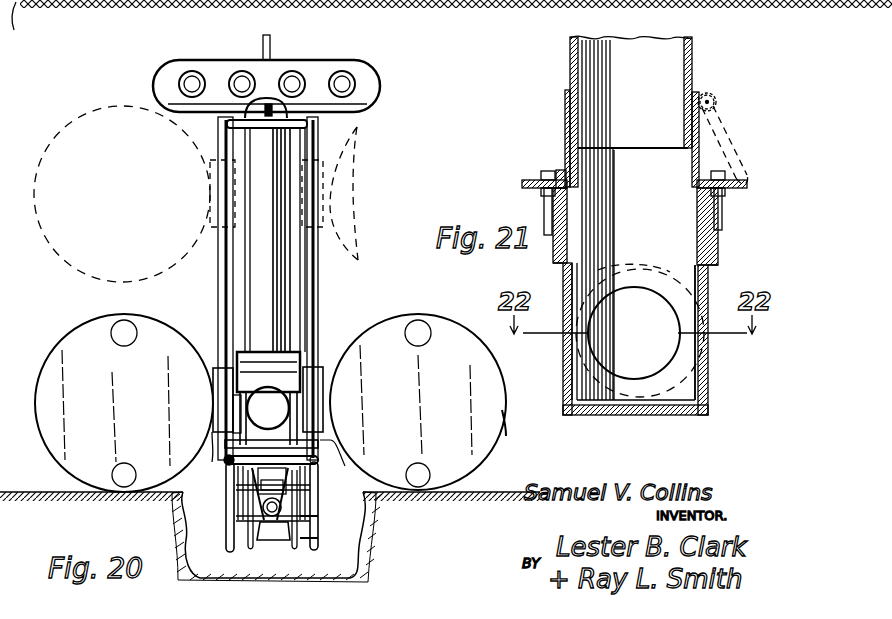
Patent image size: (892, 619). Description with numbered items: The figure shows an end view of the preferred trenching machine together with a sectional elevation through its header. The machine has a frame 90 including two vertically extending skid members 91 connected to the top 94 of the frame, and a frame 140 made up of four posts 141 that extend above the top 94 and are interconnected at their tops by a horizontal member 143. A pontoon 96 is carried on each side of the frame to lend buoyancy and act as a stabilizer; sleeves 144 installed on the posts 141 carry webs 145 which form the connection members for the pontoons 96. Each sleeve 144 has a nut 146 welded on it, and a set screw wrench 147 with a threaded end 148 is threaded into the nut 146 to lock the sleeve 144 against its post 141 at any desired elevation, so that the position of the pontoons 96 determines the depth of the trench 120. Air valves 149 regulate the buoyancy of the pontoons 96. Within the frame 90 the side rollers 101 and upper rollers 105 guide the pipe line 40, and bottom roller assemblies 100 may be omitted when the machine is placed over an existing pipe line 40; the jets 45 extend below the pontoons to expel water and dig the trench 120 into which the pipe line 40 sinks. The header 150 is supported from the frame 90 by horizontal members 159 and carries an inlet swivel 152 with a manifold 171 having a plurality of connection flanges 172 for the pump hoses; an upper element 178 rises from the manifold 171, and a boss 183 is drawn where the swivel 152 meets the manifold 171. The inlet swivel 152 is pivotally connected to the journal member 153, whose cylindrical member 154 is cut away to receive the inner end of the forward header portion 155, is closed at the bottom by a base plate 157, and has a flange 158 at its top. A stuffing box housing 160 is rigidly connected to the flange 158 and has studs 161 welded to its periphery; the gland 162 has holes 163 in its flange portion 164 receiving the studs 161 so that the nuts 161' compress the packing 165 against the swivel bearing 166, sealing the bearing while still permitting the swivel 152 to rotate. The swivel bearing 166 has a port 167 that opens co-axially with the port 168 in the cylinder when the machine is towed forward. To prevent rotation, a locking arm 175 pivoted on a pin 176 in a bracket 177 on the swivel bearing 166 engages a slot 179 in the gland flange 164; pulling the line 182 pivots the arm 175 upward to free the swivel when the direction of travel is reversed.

In FIG. 20, the manifold 171 is at (184, 64).
In FIG. 20, the connection flanges 172 is at (193, 80).
In FIG. 20, the upper rod 178 is at (270, 42).
In FIG. 20, the boss 183 is at (270, 104).
In FIG. 20, the horizontal member 143 is at (305, 122).
In FIG. 20, the pontoon 96 is at (88, 152).
In FIG. 21, the pontoon 96 is at (497, 438).
In FIG. 20, the inlet swivel 152 is at (255, 214).
In FIG. 21, the inlet swivel 152 is at (699, 61).
In FIG. 20, the line 182 is at (270, 266).
In FIG. 20, the frame 140 is at (212, 300).
In FIG. 20, the posts 141 is at (315, 296).
In FIG. 20, the webs 145 is at (213, 368).
In FIG. 20, the set screw wrench 147 is at (240, 352).
In FIG. 20, the gland 162 is at (260, 368).
In FIG. 21, the gland 162 is at (582, 216).
In FIG. 20, the swivel bearing 166 is at (297, 352).
In FIG. 21, the swivel bearing 166 is at (692, 173).
In FIG. 20, the air valves 149 is at (428, 338).
In FIG. 20, the nut 146 is at (233, 410).
In FIG. 20, the threaded end 148 is at (268, 408).
In FIG. 20, the header 150 is at (288, 410).
In FIG. 20, the sleeves 144 is at (255, 457).
In FIG. 20, the horizontal members 159 is at (318, 448).
In FIG. 20, the top of the frame 94 is at (320, 484).
In FIG. 20, the side rollers 101 is at (270, 494).
In FIG. 20, the upper rollers 105 is at (240, 504).
In FIG. 20, the jets 45 is at (237, 523).
In FIG. 20, the trench 120 is at (258, 507).
In FIG. 20, the skid members 91 is at (318, 518).
In FIG. 20, the frame 90 is at (318, 539).
In FIG. 20, the pipe line 40 is at (258, 552).
In FIG. 20, the bottom roller assemblies 100 is at (285, 548).
In FIG. 21, the bracket 177 is at (700, 100).
In FIG. 21, the pin 176 is at (714, 104).
In FIG. 21, the locking arm 175 is at (730, 136).
In FIG. 21, the slot 179 is at (730, 176).
In FIG. 21, the nuts 161' is at (523, 168).
In FIG. 21, the flange portion 164 is at (556, 176).
In FIG. 21, the holes 163 is at (540, 186).
In FIG. 21, the studs 161 is at (539, 225).
In FIG. 21, the packing 165 is at (583, 241).
In FIG. 21, the forward header portion 155 is at (672, 276).
In FIG. 21, the stuffing box housing 160 is at (718, 250).
In FIG. 21, the flange 158 is at (556, 266).
In FIG. 21, the journal member 153 is at (728, 275).
In FIG. 21, the port 167 is at (654, 291).
In FIG. 21, the port 168 is at (654, 344).
In FIG. 21, the cylindrical member 154 is at (708, 366).
In FIG. 21, the base plate 157 is at (617, 416).